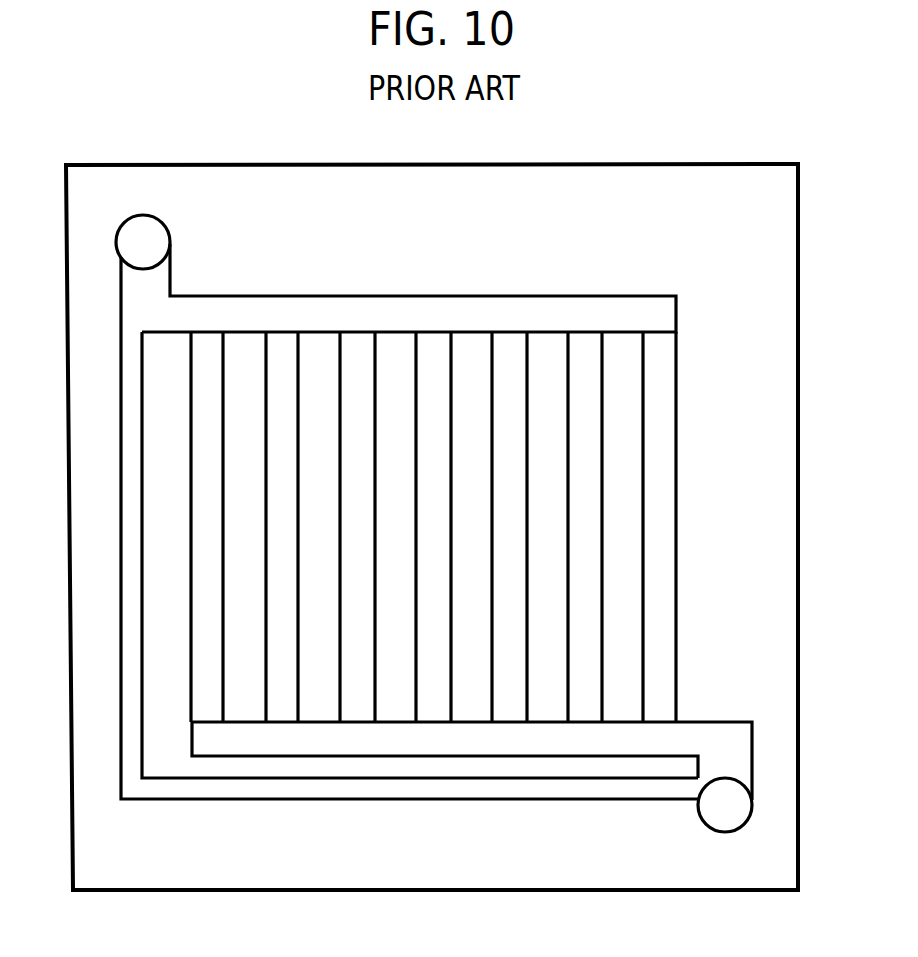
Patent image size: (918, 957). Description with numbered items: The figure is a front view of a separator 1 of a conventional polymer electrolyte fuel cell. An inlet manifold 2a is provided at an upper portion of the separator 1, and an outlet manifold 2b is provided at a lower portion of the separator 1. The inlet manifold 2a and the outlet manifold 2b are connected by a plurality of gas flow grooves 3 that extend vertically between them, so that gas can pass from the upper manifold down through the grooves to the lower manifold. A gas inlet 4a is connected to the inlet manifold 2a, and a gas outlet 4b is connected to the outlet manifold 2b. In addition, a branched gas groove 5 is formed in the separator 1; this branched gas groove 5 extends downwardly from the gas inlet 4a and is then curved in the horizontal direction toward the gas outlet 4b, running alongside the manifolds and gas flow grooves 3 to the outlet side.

The separator 1 is at (616, 159).
The inlet manifold 2a is at (330, 320).
The outlet manifold 2b is at (478, 742).
The gas flow grooves 3 is at (508, 358).
The gas inlet 4a is at (130, 241).
The gas outlet 4b is at (728, 813).
The branched gas groove 5 is at (187, 785).